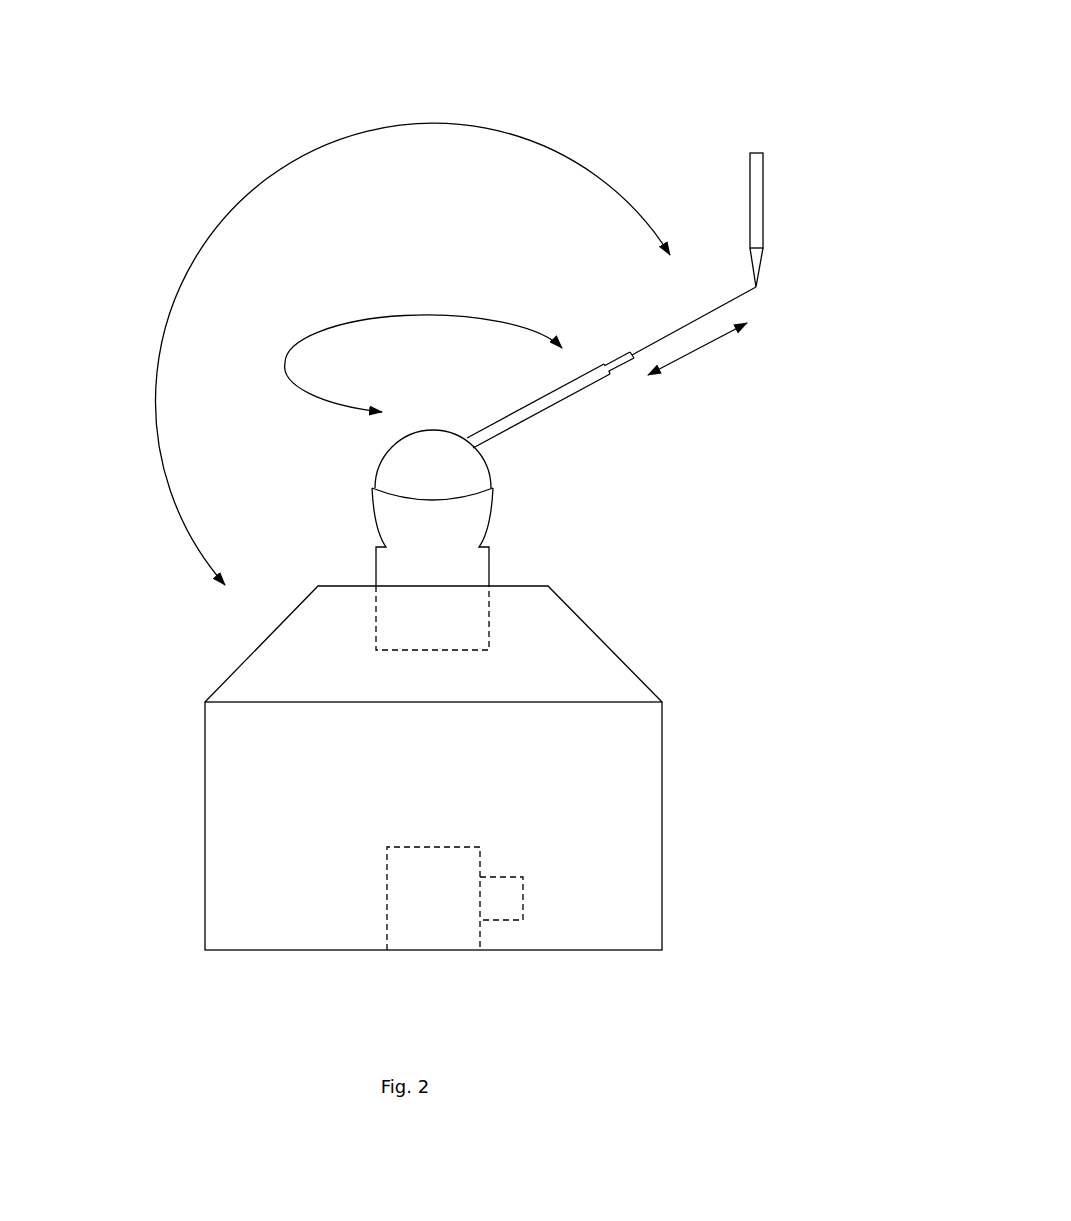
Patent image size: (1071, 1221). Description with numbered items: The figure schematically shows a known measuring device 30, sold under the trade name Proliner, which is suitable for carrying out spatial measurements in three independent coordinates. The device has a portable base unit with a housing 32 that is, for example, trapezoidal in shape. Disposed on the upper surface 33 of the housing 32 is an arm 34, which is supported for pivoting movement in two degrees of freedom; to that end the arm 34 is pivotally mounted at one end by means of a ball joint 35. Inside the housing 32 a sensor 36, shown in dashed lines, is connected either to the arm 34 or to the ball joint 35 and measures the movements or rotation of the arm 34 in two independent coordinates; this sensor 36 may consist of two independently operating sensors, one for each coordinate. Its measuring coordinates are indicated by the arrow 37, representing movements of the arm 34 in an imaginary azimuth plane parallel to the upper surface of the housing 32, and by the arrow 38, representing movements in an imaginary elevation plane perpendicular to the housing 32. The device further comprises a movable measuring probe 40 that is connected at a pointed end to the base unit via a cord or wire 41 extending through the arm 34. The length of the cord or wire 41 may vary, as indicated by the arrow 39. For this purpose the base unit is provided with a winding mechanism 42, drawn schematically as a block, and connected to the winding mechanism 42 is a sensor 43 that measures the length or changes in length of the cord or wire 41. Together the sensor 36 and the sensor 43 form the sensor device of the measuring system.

The measuring device 30 is at (623, 80).
The housing 32 is at (223, 752).
The upper surface 33 is at (518, 586).
The arm 34 is at (542, 403).
The ball joint 35 is at (402, 462).
The sensor 36 is at (376, 623).
The arrow 37 is at (418, 313).
The arrow 38 is at (270, 172).
The arrow 39 is at (705, 345).
The measuring probe 40 is at (752, 170).
The cord or wire 41 is at (662, 333).
The winding mechanism 42 is at (403, 932).
The sensor 43 is at (498, 905).